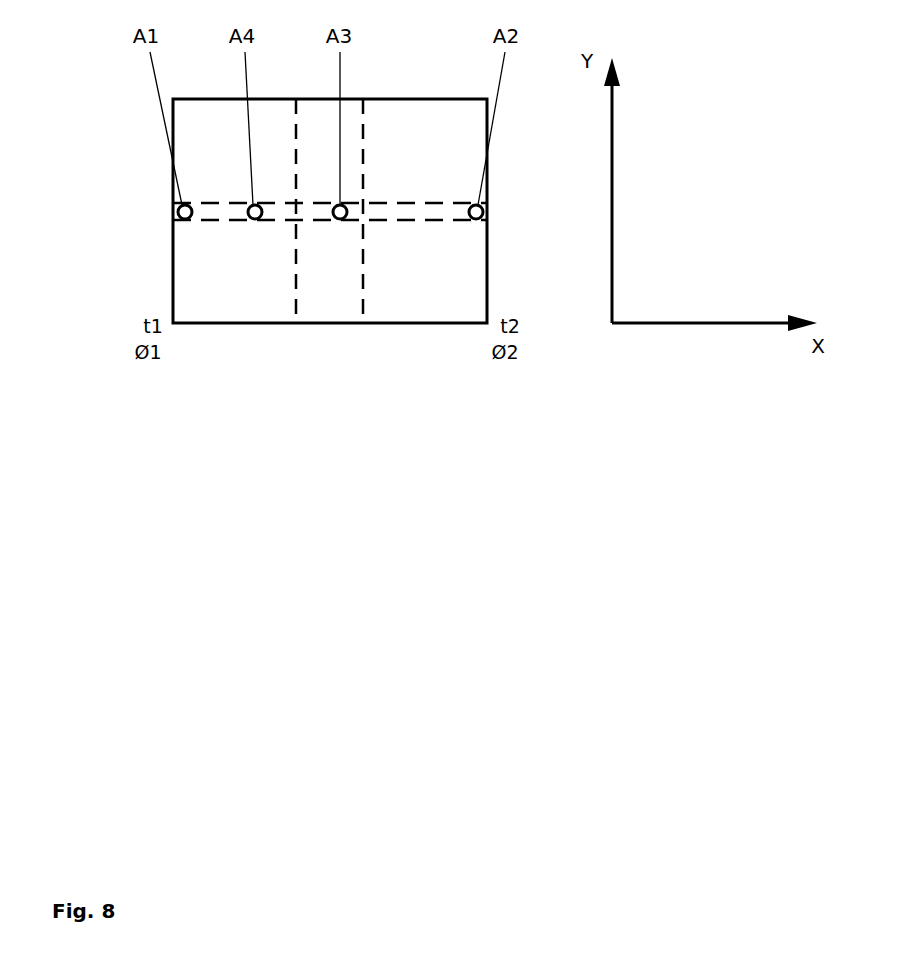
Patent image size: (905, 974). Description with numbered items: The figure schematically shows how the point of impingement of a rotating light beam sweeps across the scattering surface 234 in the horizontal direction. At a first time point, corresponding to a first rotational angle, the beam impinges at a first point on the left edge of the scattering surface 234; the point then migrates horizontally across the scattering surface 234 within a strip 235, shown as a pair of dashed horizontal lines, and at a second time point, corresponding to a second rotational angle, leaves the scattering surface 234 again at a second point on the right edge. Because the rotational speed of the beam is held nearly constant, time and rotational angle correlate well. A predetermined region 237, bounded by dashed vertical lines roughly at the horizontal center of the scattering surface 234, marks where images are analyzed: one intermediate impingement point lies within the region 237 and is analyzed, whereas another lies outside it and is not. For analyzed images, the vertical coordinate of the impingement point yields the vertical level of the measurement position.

The scattering surface 234 is at (436, 303).
The strip 235 is at (363, 207).
The predetermined region 237 is at (327, 304).